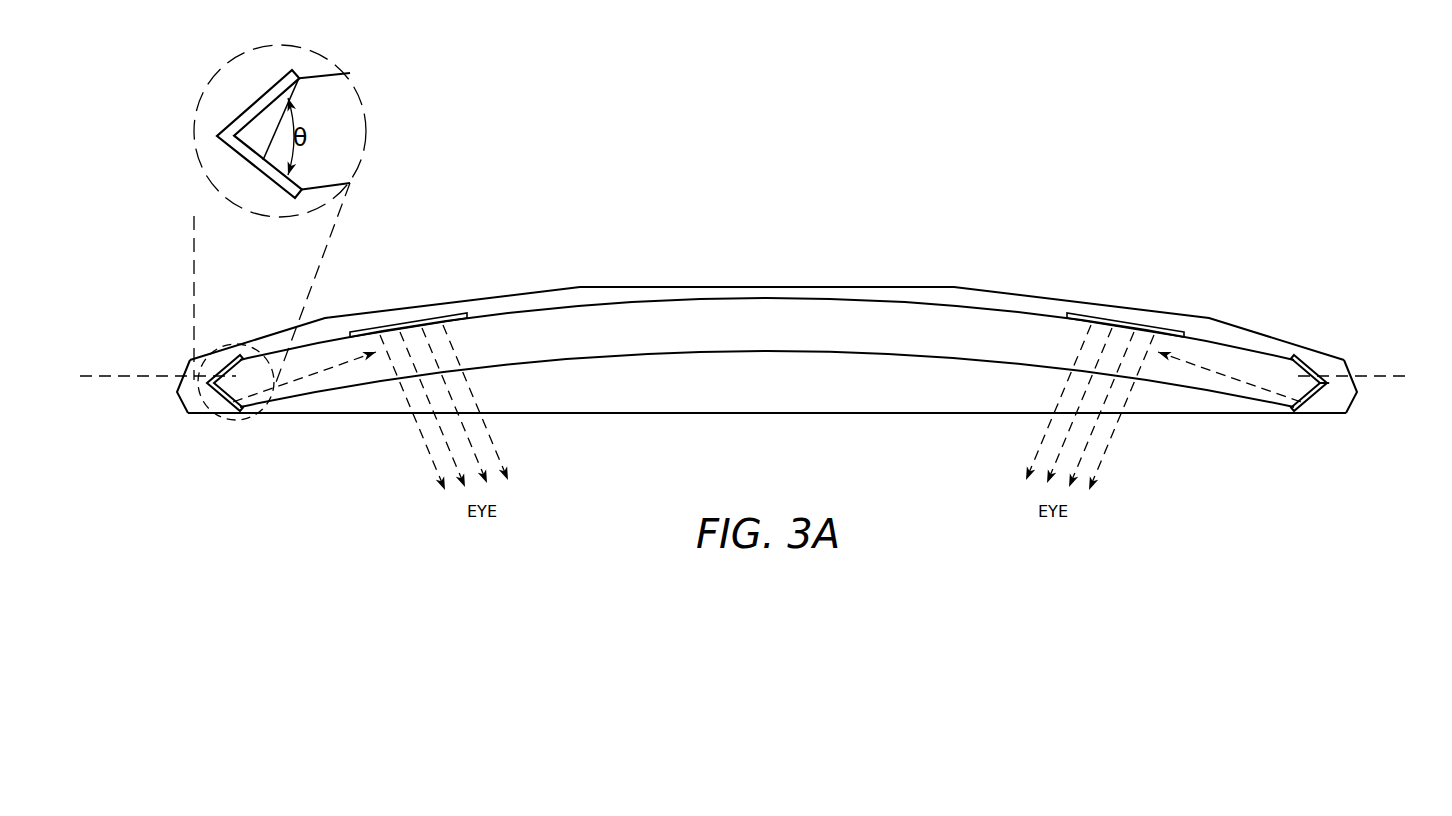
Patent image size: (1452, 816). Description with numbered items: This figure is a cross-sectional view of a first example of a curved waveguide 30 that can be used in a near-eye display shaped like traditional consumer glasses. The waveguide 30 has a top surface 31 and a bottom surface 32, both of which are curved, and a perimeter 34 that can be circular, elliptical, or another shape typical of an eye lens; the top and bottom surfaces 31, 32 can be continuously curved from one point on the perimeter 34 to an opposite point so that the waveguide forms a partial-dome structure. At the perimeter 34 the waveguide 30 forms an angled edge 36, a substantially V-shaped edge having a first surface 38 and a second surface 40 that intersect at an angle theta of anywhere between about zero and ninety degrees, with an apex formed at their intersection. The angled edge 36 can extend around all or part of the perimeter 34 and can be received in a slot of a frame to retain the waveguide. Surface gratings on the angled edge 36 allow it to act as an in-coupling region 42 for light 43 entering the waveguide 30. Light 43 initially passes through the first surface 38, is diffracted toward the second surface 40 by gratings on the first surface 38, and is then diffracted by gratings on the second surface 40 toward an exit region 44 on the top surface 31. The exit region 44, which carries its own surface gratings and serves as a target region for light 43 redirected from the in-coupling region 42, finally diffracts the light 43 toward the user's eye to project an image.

The curved waveguide 30 is at (779, 267).
The top surface 31 is at (770, 298).
The bottom surface 32 is at (765, 352).
The perimeter 34 is at (185, 373).
The angled edge 36 is at (1358, 383).
The first surface 38 is at (1313, 368).
The second surface 40 is at (1315, 397).
The in-coupling region 42 is at (207, 435).
The light 43 is at (133, 372).
The exit region 44 is at (410, 323).